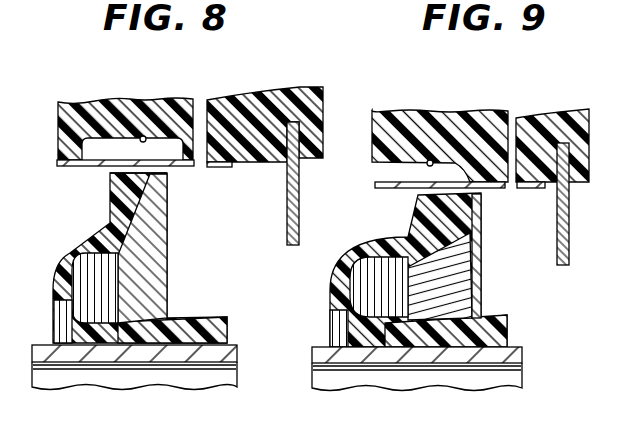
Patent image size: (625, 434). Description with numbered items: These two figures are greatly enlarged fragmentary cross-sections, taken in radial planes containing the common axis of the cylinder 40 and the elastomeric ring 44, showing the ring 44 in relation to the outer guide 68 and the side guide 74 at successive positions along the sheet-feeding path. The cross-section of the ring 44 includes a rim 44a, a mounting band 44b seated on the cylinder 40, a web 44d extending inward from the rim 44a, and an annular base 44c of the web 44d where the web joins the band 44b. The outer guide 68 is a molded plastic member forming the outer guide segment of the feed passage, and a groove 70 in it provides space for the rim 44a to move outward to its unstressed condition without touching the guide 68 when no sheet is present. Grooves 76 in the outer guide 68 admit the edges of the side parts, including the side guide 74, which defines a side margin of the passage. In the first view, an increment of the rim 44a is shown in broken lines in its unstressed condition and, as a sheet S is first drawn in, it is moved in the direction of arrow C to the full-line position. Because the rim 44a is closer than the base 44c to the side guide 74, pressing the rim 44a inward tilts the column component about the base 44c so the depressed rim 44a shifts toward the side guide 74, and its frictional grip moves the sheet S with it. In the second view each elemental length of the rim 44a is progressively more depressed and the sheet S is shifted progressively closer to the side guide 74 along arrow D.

In FIG. 8, the cylinder 40 is at (230, 357).
In FIG. 9, the cylinder 40 is at (517, 356).
In FIG. 8, the ring 44 is at (147, 261).
In FIG. 9, the ring 44 is at (443, 288).
In FIG. 8, the rim 44a is at (122, 201).
In FIG. 9, the rim 44a is at (430, 213).
In FIG. 8, the mounting band 44b is at (200, 320).
In FIG. 9, the mounting band 44b is at (446, 331).
In FIG. 8, the annular base 44c is at (72, 328).
In FIG. 9, the annular base 44c is at (332, 340).
In FIG. 8, the web 44d is at (95, 241).
In FIG. 9, the web 44d is at (354, 262).
In FIG. 8, the outer guide 68 is at (244, 100).
In FIG. 9, the outer guide 68 is at (521, 127).
In FIG. 8, the groove 70 is at (143, 138).
In FIG. 9, the groove 70 is at (430, 160).
In FIG. 8, the side guide 74 is at (287, 191).
In FIG. 9, the side guide 74 is at (569, 250).
In FIG. 8, the grooves 76 is at (300, 172).
In FIG. 9, the grooves 76 is at (572, 183).
In FIG. 8, the sheet S is at (193, 165).
In FIG. 9, the sheet S is at (507, 184).
In FIG. 8, the arrow C is at (172, 178).
In FIG. 9, the arrow D is at (487, 228).